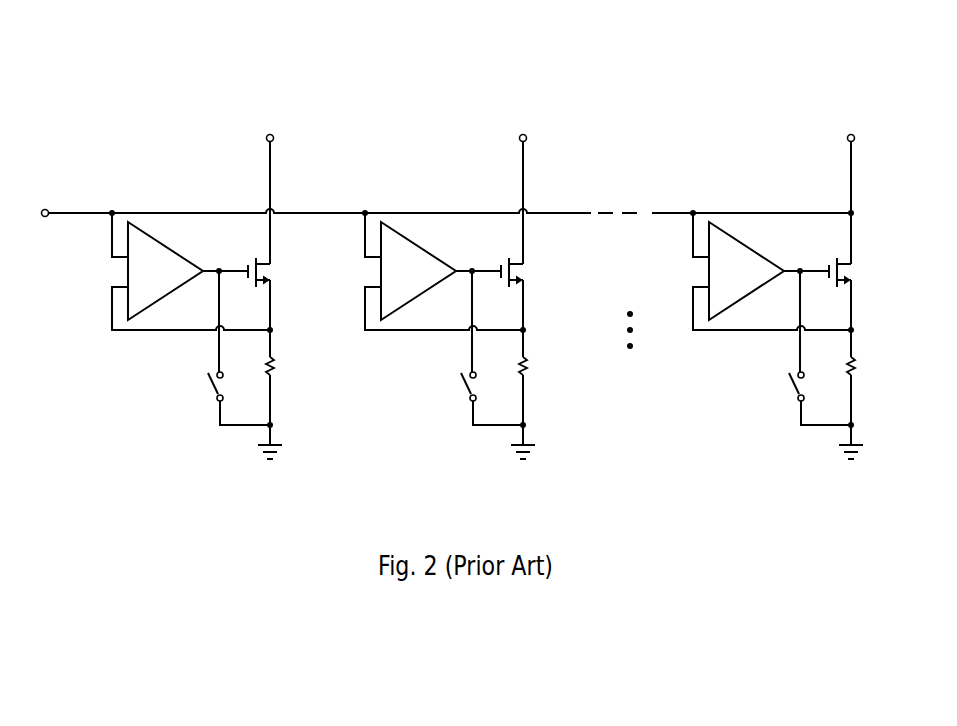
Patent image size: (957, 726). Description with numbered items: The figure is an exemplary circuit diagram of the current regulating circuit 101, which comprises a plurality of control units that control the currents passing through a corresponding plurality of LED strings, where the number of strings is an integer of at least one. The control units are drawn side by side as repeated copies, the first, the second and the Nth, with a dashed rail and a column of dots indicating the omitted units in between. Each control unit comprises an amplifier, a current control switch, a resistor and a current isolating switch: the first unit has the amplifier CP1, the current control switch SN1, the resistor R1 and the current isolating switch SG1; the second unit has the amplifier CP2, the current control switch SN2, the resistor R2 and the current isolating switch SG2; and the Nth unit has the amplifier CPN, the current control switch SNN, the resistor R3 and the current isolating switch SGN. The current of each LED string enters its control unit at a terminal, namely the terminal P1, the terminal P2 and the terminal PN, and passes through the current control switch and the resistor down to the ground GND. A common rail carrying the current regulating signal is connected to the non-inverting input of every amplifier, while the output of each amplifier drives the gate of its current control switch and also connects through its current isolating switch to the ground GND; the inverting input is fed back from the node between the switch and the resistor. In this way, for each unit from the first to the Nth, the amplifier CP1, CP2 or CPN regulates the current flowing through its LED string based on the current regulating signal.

The current regulating circuit 101 is at (868, 80).
The amplifier CP1 is at (165, 271).
The amplifier CP2 is at (418, 271).
The amplifier CPN is at (746, 271).
The current control switch SN1 is at (280, 272).
The current control switch SN2 is at (533, 272).
The current control switch SNN is at (862, 272).
The resistor R1 is at (291, 368).
The resistor R2 is at (544, 368).
The resistor R3 is at (872, 368).
The current isolating switch SG1 is at (218, 398).
The current isolating switch SG2 is at (471, 398).
The current isolating switch SGN is at (798, 398).
The terminal P1 is at (271, 187).
The terminal P2 is at (524, 187).
The terminal PN is at (852, 187).
The ground GND is at (262, 464).